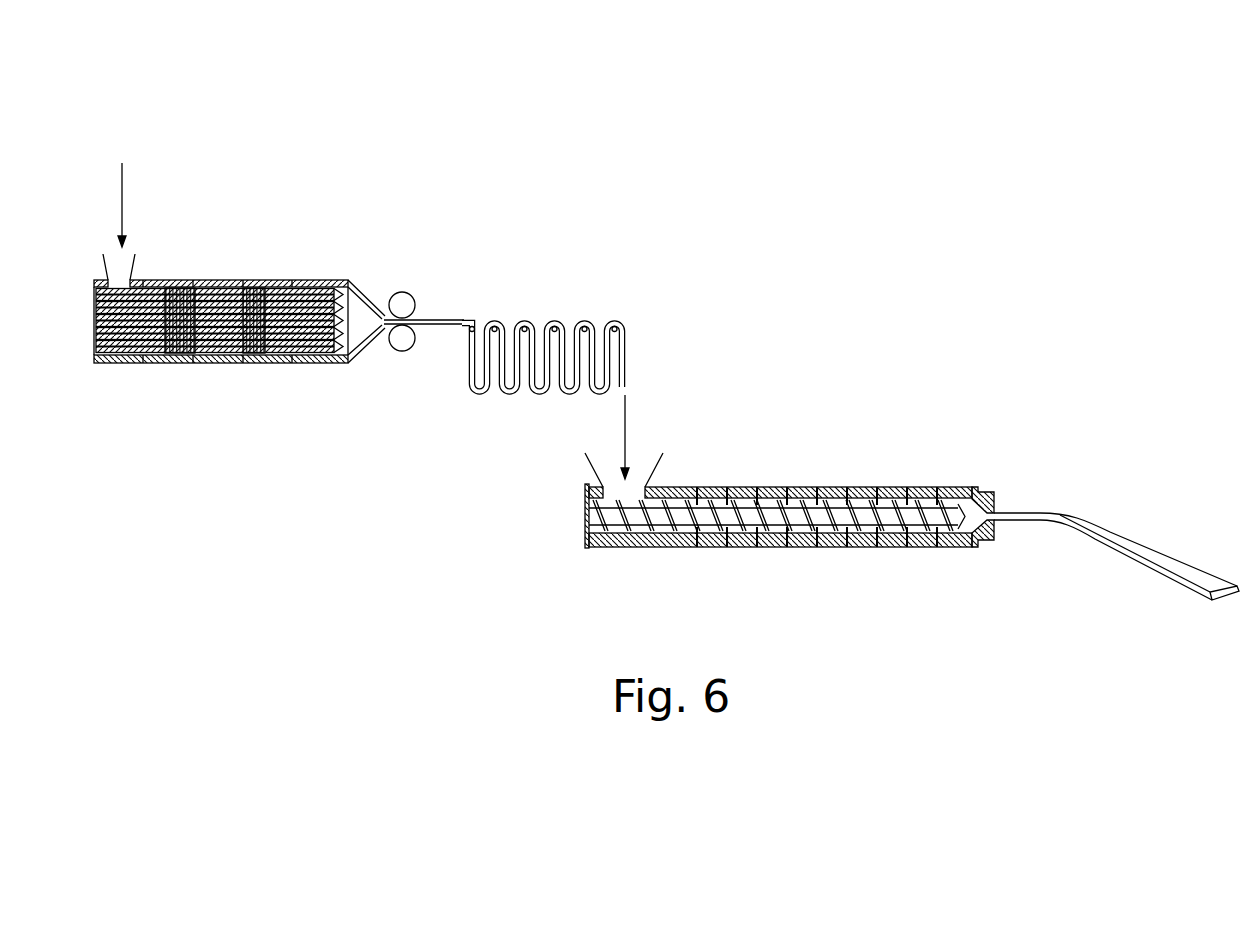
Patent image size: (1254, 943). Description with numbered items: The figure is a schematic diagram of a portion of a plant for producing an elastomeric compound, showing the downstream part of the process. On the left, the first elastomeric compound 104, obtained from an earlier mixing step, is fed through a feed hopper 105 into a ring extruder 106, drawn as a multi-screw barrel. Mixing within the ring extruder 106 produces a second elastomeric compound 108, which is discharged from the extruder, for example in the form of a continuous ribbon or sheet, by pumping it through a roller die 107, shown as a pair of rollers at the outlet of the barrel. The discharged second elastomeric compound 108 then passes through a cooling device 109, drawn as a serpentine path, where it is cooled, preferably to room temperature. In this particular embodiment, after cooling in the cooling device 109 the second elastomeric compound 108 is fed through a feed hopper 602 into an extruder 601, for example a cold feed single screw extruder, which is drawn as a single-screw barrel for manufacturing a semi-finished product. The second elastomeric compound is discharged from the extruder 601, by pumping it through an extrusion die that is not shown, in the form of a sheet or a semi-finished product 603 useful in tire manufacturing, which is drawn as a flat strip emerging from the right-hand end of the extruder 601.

The first elastomeric compound 104 is at (122, 178).
The feed hopper 105 is at (127, 254).
The ring extruder 106 is at (266, 280).
The roller die 107 is at (404, 302).
The second elastomeric compound 108 is at (452, 320).
The cooling device 109 is at (557, 328).
The extruder 601 is at (842, 487).
The feed hopper 602 is at (650, 460).
The semi-finished product 603 is at (1135, 555).